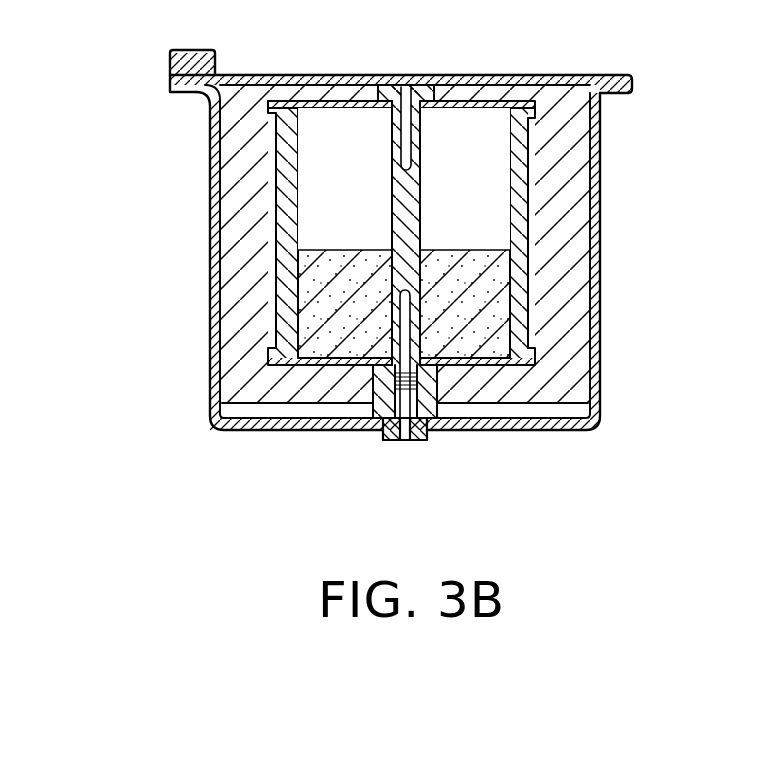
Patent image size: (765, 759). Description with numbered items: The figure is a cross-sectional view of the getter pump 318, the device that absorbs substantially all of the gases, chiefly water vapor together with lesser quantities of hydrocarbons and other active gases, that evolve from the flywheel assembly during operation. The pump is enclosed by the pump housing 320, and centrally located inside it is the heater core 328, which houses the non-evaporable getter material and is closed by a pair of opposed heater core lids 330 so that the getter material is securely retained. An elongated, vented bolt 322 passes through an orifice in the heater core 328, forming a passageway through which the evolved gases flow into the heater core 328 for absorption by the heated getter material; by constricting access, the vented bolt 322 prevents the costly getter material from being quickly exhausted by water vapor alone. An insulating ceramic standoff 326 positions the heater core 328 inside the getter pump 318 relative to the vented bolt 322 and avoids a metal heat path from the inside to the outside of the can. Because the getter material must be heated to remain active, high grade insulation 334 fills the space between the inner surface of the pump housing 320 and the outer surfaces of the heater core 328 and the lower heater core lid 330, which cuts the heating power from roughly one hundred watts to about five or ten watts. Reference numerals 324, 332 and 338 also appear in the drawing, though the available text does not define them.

The getter pump 318 is at (158, 283).
The pump housing 320 is at (598, 207).
The vented bolt 322 is at (383, 434).
The center pin shaft 324 is at (437, 422).
The standoff 326 is at (435, 368).
The heater core 328 is at (597, 145).
The heater core lids 330 is at (487, 110).
The inner cup (left) 332 is at (278, 172).
The high grade insulation 334 is at (567, 290).
The chamber 338 is at (338, 127).